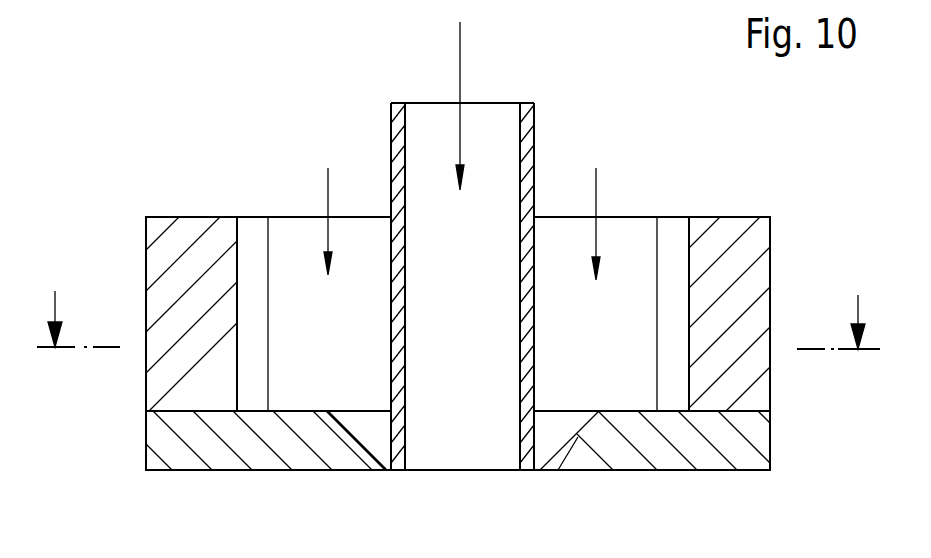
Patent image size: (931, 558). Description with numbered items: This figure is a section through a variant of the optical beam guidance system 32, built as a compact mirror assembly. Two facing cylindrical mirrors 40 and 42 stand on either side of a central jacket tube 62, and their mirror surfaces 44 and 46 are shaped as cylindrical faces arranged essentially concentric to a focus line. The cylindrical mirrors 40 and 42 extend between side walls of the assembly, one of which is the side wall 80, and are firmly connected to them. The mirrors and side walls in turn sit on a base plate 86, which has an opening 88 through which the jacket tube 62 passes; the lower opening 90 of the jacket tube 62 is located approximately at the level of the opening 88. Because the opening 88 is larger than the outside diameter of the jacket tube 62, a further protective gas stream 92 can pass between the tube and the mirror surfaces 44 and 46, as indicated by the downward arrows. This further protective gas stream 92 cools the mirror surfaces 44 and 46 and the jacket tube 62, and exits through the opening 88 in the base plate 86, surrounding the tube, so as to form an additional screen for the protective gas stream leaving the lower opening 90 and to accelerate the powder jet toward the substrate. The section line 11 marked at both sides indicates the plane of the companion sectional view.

The section line 11 is at (456, 318).
The optical beam guidance system 32 is at (722, 193).
The cylindrical mirror 40 is at (222, 392).
The cylindrical mirror 42 is at (740, 383).
The mirror surface 44 is at (248, 237).
The mirror surface 46 is at (670, 232).
The jacket tube 62 is at (535, 150).
The side wall 80 is at (362, 235).
The base plate 86 is at (672, 450).
The opening 88 is at (537, 468).
The lower opening 90 is at (442, 463).
The further protective gas stream 92 is at (597, 197).